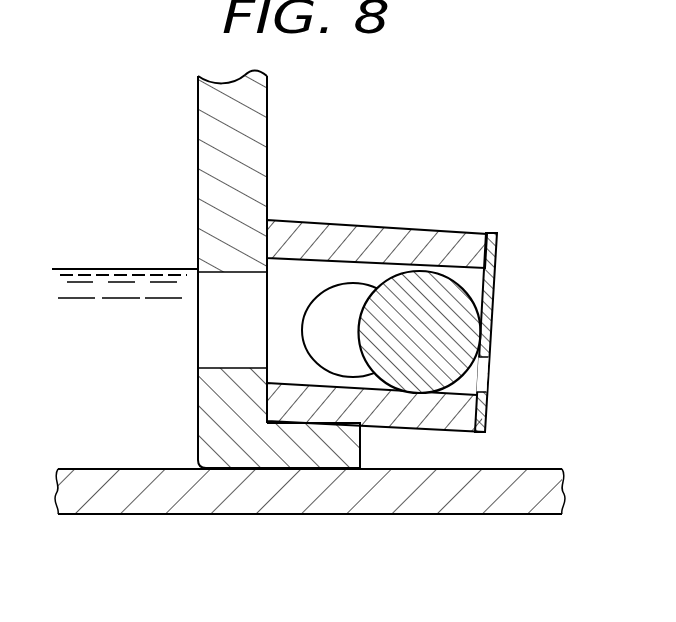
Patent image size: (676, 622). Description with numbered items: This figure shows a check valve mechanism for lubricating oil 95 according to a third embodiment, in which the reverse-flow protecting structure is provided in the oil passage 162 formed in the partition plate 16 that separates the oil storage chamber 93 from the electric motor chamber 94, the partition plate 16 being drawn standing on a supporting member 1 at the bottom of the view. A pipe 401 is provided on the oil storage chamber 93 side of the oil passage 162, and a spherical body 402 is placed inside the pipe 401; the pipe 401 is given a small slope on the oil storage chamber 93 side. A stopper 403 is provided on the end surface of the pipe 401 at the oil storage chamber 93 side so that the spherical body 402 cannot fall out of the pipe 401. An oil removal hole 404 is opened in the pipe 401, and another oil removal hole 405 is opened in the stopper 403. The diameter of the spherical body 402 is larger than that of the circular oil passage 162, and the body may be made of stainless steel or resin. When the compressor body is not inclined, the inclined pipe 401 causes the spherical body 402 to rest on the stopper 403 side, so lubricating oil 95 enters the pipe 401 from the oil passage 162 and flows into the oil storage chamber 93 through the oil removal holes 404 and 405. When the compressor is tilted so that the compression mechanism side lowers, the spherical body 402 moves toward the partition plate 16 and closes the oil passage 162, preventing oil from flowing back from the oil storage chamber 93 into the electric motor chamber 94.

The base plate 1 is at (517, 515).
The partition plate 16 is at (198, 107).
The oil passage 162 is at (198, 338).
The oil storage chamber 93 is at (344, 124).
The electric motor chamber 94 is at (97, 222).
The lubricating oil 95 is at (135, 450).
The pipe 401 is at (420, 237).
The spherical body 402 is at (462, 309).
The stopper 403 is at (497, 258).
The oil removal hole 404 is at (348, 283).
The oil removal hole 405 is at (490, 379).